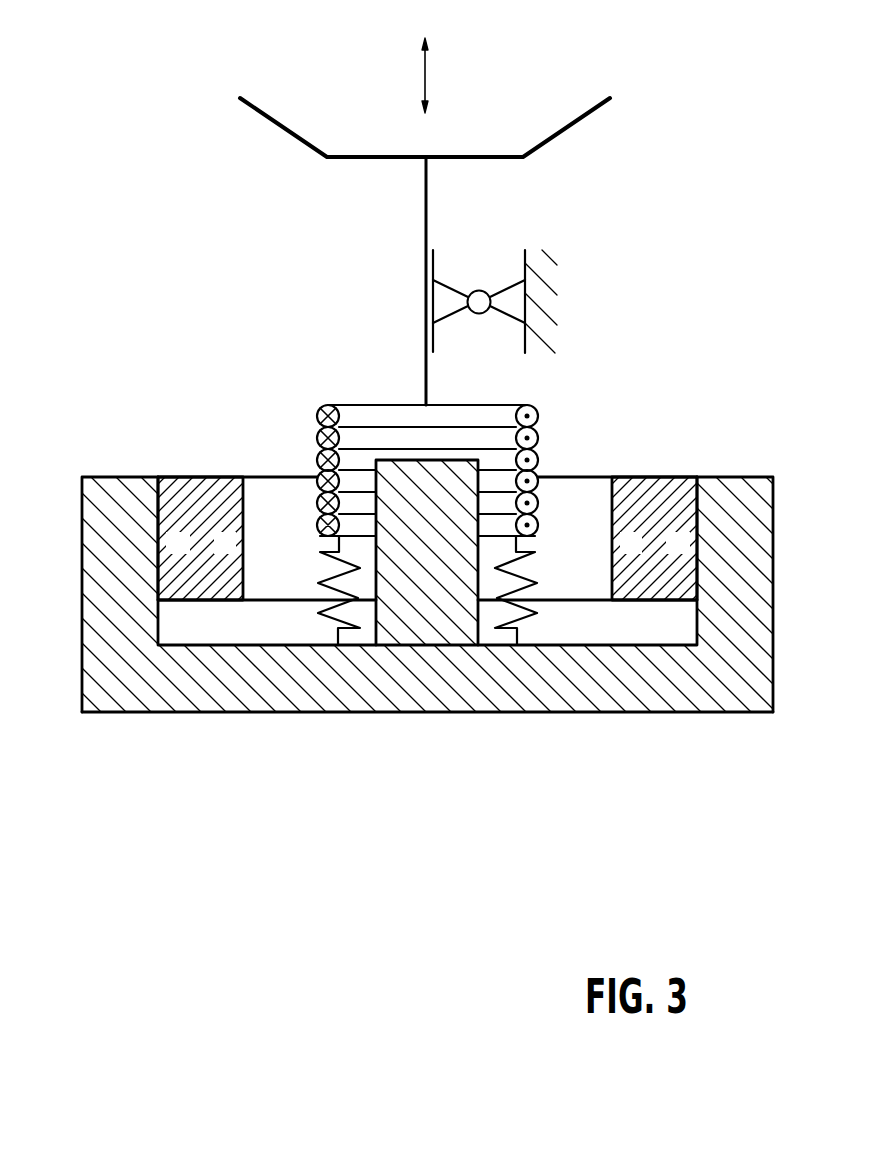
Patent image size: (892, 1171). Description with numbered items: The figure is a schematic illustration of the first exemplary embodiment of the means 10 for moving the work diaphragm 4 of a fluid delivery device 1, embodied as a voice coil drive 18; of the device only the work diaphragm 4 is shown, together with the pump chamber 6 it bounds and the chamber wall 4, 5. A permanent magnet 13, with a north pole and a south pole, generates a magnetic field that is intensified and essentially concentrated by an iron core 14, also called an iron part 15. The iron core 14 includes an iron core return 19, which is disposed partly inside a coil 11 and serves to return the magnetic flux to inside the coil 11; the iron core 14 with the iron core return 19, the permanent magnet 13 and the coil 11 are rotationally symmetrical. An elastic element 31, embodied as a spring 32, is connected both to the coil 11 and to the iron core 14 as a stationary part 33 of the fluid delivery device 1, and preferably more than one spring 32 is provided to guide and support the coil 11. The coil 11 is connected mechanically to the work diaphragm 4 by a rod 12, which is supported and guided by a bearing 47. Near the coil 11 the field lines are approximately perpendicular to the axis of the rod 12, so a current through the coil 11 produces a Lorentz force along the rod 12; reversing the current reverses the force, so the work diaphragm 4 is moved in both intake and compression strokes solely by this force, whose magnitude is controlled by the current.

The fluid delivery device 1 is at (427, 494).
The means for moving the work diaphragm 10 is at (427, 494).
The voice coil drive 18 is at (427, 494).
The work diaphragm 4 is at (425, 78).
The diaphragm 5 is at (563, 127).
The pump chamber 6 is at (373, 127).
The rod 12 is at (425, 200).
The bearing 47 is at (488, 252).
The coil 11 is at (427, 533).
The permanent magnet 13 is at (198, 500).
The iron core 14 is at (427, 645).
The iron part 15 is at (134, 675).
The iron core return 19 is at (427, 488).
The elastic element 31 is at (442, 653).
The spring 32 is at (328, 620).
The stationary part 33 is at (505, 670).